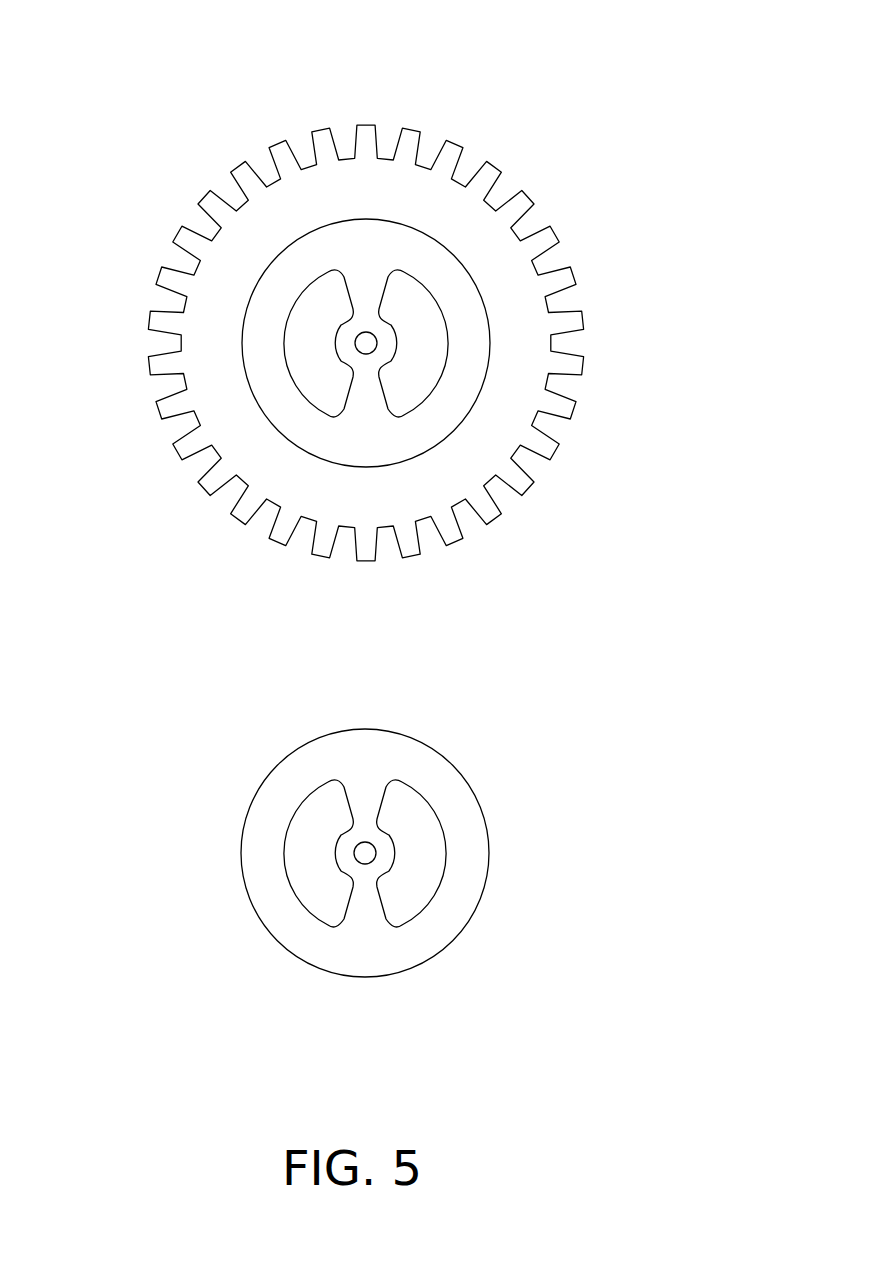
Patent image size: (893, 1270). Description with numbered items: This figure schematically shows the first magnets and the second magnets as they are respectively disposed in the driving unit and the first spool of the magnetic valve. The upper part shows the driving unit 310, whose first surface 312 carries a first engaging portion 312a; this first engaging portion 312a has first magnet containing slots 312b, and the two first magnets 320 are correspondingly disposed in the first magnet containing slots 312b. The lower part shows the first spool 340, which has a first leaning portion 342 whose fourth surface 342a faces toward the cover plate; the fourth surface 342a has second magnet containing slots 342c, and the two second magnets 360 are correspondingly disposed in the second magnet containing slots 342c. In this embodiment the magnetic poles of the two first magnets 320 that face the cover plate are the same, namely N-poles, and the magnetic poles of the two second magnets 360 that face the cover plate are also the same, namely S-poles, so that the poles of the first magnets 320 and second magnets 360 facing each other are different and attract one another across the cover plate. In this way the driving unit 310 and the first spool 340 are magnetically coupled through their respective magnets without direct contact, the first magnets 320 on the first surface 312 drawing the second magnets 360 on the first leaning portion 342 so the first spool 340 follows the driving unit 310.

The driving unit 310 is at (412, 291).
The first surface 312 is at (371, 190).
The first engaging portion 312a is at (470, 330).
The first magnet containing slot 312b is at (284, 349).
The first magnet 320 is at (323, 300).
The first spool 340 is at (461, 821).
The first leaning portion 342 is at (443, 922).
The fourth surface 342a is at (397, 770).
The second magnet containing slot 342c is at (445, 850).
The second magnet 360 is at (312, 813).